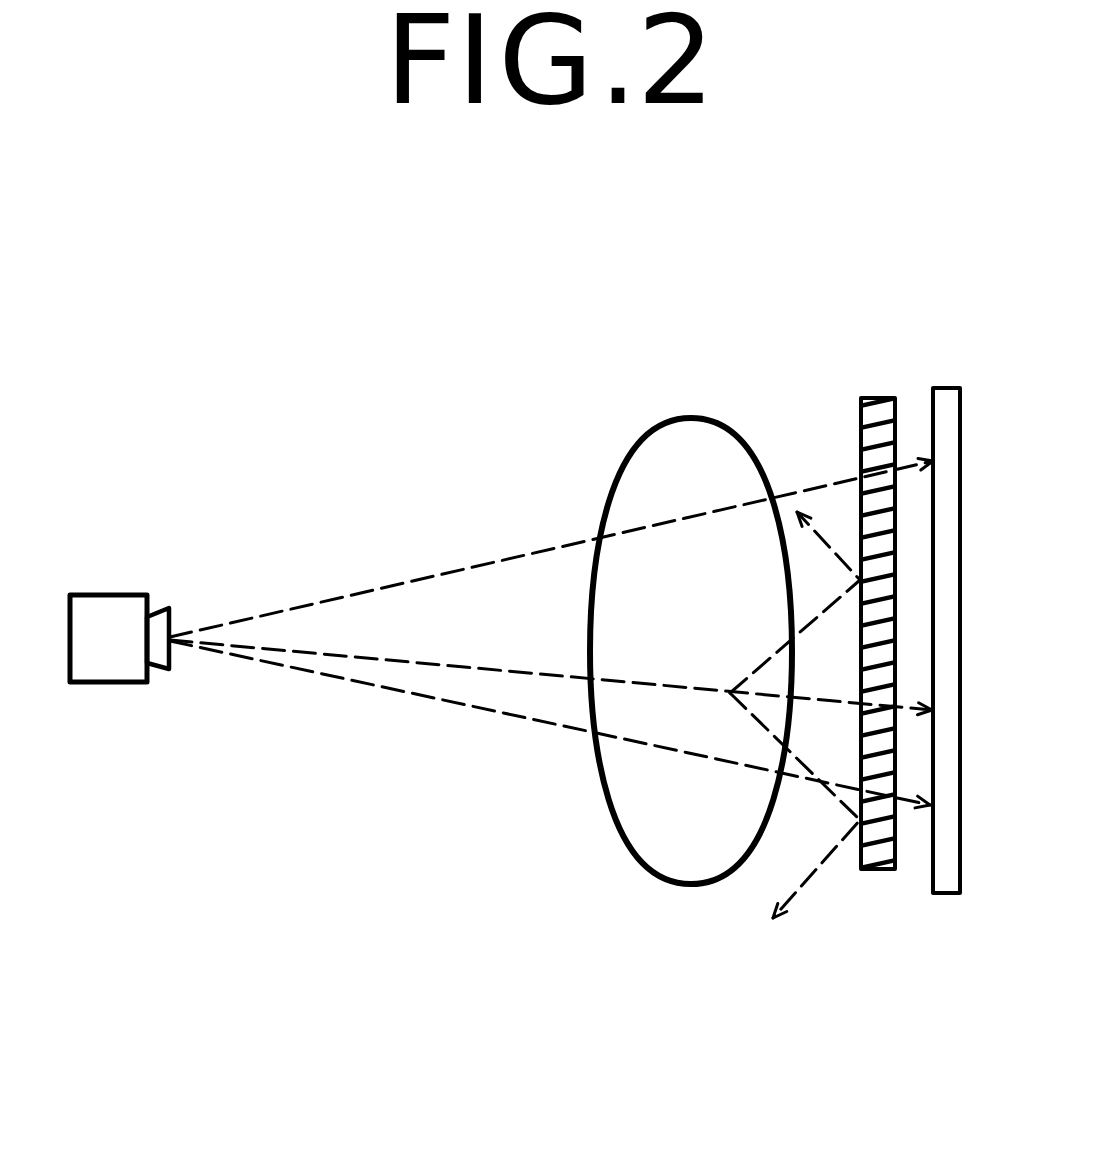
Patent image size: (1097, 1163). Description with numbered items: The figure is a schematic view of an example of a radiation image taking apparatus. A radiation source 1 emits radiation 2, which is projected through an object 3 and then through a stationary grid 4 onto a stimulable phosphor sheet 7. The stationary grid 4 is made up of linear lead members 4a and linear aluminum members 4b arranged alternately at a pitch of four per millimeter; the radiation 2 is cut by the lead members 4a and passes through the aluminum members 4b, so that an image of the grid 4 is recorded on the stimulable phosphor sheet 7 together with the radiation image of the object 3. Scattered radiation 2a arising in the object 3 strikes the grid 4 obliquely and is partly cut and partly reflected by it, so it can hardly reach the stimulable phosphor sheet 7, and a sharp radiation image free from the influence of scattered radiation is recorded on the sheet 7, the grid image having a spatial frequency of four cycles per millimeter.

The radiation source 1 is at (118, 596).
The radiation 2 is at (418, 575).
The scattered radiation 2a is at (760, 662).
The object 3 is at (612, 480).
The stationary grid 4 is at (878, 397).
The lead members 4a is at (860, 478).
The aluminum members 4b is at (885, 793).
The stimulable phosphor sheet 7 is at (948, 388).